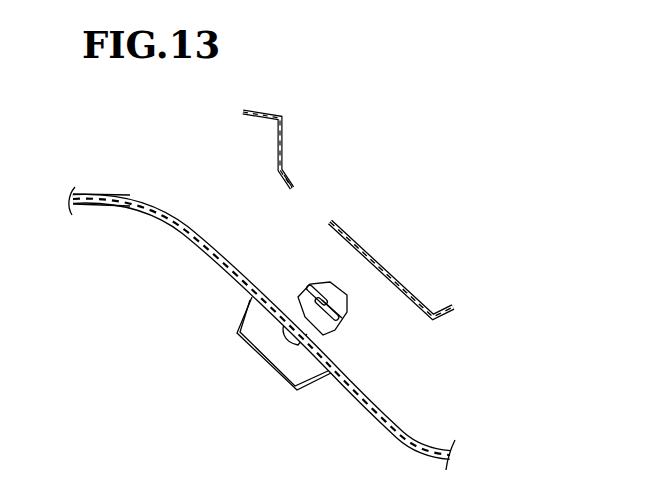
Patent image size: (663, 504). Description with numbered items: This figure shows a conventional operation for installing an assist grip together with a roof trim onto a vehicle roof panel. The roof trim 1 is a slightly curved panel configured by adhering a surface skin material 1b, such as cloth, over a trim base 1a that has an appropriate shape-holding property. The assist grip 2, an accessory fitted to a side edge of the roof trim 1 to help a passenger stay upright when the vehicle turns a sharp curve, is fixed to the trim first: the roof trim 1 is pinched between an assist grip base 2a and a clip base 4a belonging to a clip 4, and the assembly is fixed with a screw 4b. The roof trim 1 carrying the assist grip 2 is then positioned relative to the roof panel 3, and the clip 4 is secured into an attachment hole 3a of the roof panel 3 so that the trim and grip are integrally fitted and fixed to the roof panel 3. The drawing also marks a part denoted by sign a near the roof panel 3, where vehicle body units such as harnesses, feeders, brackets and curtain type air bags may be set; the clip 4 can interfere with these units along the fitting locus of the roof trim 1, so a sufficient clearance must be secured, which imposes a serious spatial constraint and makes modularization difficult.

The roof trim 1 is at (177, 230).
The trim base 1a is at (93, 193).
The surface skin material 1b is at (92, 208).
The assist grip 2 is at (238, 343).
The assist grip base 2a is at (270, 335).
The roof panel 3 is at (285, 140).
The attachment hole 3a is at (312, 207).
The clip 4 is at (307, 283).
The clip base 4a is at (333, 343).
The screw 4b is at (298, 347).
The part where vehicle body units may be set a is at (387, 287).